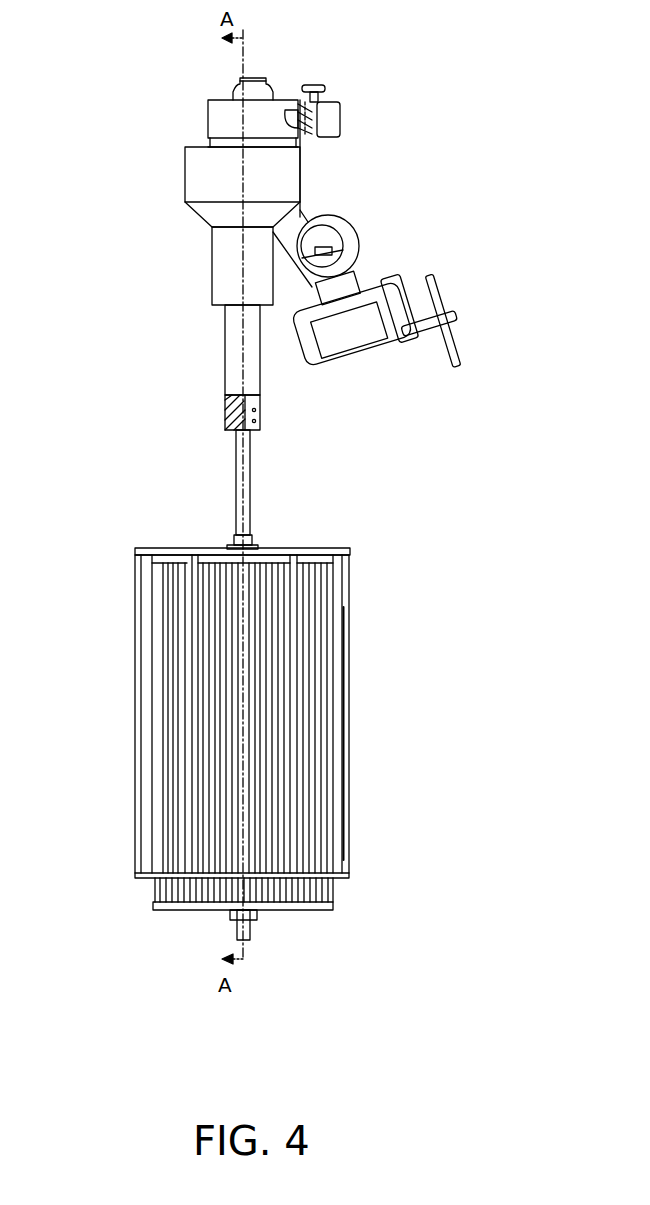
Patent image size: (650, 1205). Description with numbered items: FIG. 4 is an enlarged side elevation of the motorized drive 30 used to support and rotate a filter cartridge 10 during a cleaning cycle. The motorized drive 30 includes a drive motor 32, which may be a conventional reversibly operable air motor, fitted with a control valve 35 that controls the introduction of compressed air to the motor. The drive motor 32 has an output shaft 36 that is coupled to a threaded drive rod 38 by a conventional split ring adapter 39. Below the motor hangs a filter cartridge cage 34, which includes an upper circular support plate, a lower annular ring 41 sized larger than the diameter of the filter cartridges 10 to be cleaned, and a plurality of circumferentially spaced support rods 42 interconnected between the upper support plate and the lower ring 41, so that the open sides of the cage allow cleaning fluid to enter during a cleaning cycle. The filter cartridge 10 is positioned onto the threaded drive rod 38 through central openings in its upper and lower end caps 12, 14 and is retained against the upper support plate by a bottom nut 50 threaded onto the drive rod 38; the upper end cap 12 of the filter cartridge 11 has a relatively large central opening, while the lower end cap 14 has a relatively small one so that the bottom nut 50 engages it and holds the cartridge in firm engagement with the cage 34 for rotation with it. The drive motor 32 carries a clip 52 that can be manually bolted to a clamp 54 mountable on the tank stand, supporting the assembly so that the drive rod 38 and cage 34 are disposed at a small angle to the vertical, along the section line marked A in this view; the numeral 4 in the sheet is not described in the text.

The drum assembly 4 is at (148, 548).
The filter cartridge 10 is at (210, 733).
The filter cartridge 11 is at (197, 650).
The upper end cap 12 is at (332, 573).
The lower end cap 14 is at (312, 913).
The motorized drive 30 is at (355, 206).
The drive motor 32 is at (185, 175).
The filter cartridge cage 34 is at (343, 541).
The control valve 35 is at (337, 100).
The output shaft 36 is at (225, 348).
The threaded drive rod 38 is at (236, 495).
The split ring adapter 39 is at (228, 417).
The lower annular ring 41 is at (340, 878).
The support rods 42 is at (313, 810).
The bottom nut 50 is at (230, 913).
The clip 52 is at (360, 250).
The clamp 54 is at (394, 287).